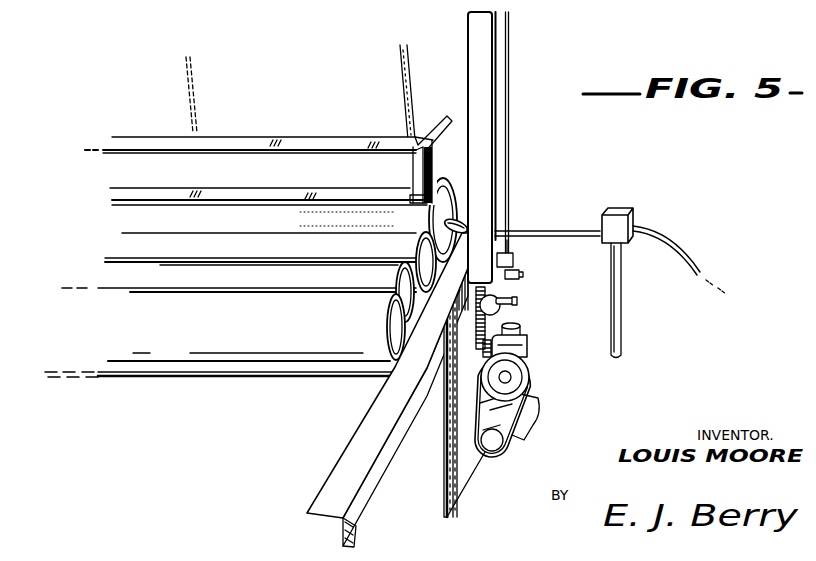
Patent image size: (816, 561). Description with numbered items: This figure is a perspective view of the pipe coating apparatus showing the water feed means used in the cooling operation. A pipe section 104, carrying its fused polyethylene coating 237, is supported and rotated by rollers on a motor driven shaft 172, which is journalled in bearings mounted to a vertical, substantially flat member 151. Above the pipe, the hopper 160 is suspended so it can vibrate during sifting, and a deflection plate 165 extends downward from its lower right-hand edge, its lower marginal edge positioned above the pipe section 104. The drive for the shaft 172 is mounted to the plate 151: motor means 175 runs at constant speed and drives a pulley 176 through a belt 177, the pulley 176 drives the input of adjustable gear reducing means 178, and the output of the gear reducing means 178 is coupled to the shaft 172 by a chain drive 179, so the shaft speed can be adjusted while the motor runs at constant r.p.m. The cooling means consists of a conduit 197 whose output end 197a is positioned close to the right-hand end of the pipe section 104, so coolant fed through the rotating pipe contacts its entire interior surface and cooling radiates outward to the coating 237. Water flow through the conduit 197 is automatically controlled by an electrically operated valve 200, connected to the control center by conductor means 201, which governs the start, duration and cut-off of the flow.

The hopper 160 is at (275, 112).
The deflection plate 165 is at (300, 170).
The fused polyethylene coating 237 is at (287, 230).
The pipe section 104 is at (416, 222).
The output end 197a is at (462, 214).
The conduit 197 is at (530, 228).
The electrically operated valve 200 is at (625, 212).
The conductor means 201 is at (688, 256).
The motor driven shaft 172 is at (516, 301).
The chain drive 179 is at (492, 316).
The gear reducing means 178 is at (522, 351).
The pulley 176 is at (512, 377).
The motor means 175 is at (537, 415).
The belt 177 is at (520, 443).
The substantially flat member 151 is at (477, 463).